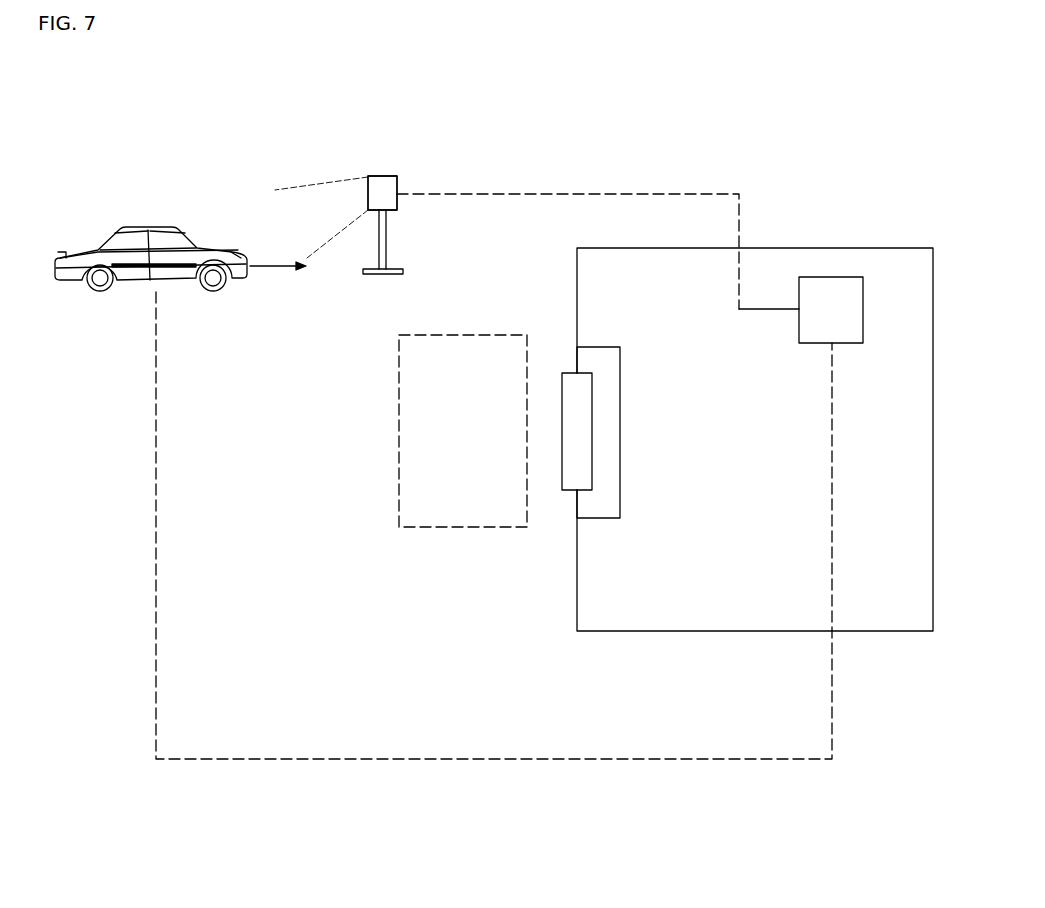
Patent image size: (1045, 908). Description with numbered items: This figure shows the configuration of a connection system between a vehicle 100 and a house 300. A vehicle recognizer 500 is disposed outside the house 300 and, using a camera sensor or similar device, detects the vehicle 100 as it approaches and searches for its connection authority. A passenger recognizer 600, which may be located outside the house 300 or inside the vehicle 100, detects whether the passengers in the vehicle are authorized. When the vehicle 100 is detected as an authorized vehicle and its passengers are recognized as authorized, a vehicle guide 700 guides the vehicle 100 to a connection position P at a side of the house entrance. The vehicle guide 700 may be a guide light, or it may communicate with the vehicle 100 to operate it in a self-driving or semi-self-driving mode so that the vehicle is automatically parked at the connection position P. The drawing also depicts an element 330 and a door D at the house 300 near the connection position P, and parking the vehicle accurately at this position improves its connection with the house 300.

The vehicle 100 is at (140, 230).
The vehicle recognizer 500 is at (385, 180).
The passenger recognizer 600 is at (382, 193).
The vehicle guide 700 is at (833, 282).
The house 300 is at (722, 632).
The door opening device 330 is at (568, 483).
The door D is at (602, 345).
The connection position P is at (400, 438).